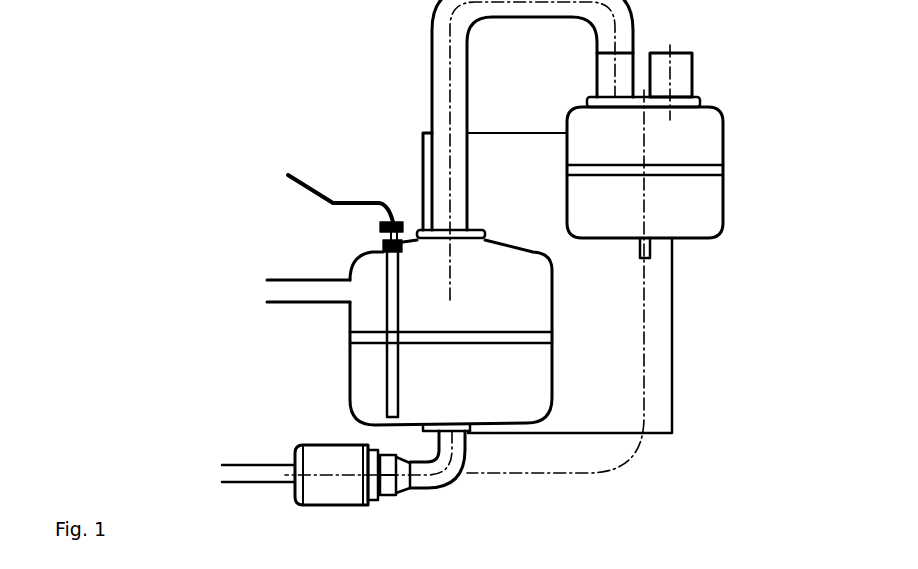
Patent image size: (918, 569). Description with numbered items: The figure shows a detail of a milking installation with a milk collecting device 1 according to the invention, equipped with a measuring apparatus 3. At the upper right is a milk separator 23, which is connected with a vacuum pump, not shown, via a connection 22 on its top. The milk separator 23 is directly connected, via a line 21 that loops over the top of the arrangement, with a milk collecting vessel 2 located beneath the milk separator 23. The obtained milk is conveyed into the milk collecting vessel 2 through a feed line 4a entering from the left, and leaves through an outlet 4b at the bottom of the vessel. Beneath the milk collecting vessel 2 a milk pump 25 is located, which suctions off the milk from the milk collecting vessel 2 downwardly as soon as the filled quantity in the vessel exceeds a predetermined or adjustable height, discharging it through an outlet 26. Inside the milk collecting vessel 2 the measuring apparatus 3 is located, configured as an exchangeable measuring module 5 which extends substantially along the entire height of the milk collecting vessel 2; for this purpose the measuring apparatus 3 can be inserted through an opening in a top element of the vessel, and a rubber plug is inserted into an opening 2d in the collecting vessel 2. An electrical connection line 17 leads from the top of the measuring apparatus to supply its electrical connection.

The milk collecting device 1 is at (288, 93).
The milk collecting vessel 2 is at (365, 313).
The opening 2d is at (375, 242).
The measuring apparatus 3 is at (387, 372).
The feed line 4a is at (292, 290).
The outlet 4b is at (458, 450).
The measuring module 5 is at (355, 185).
The electrical connection line 17 is at (300, 187).
The line 21 is at (440, 76).
The connection 22 is at (682, 73).
The milk separator 23 is at (690, 212).
The milk pump 25 is at (340, 495).
The outlet 26 is at (243, 478).